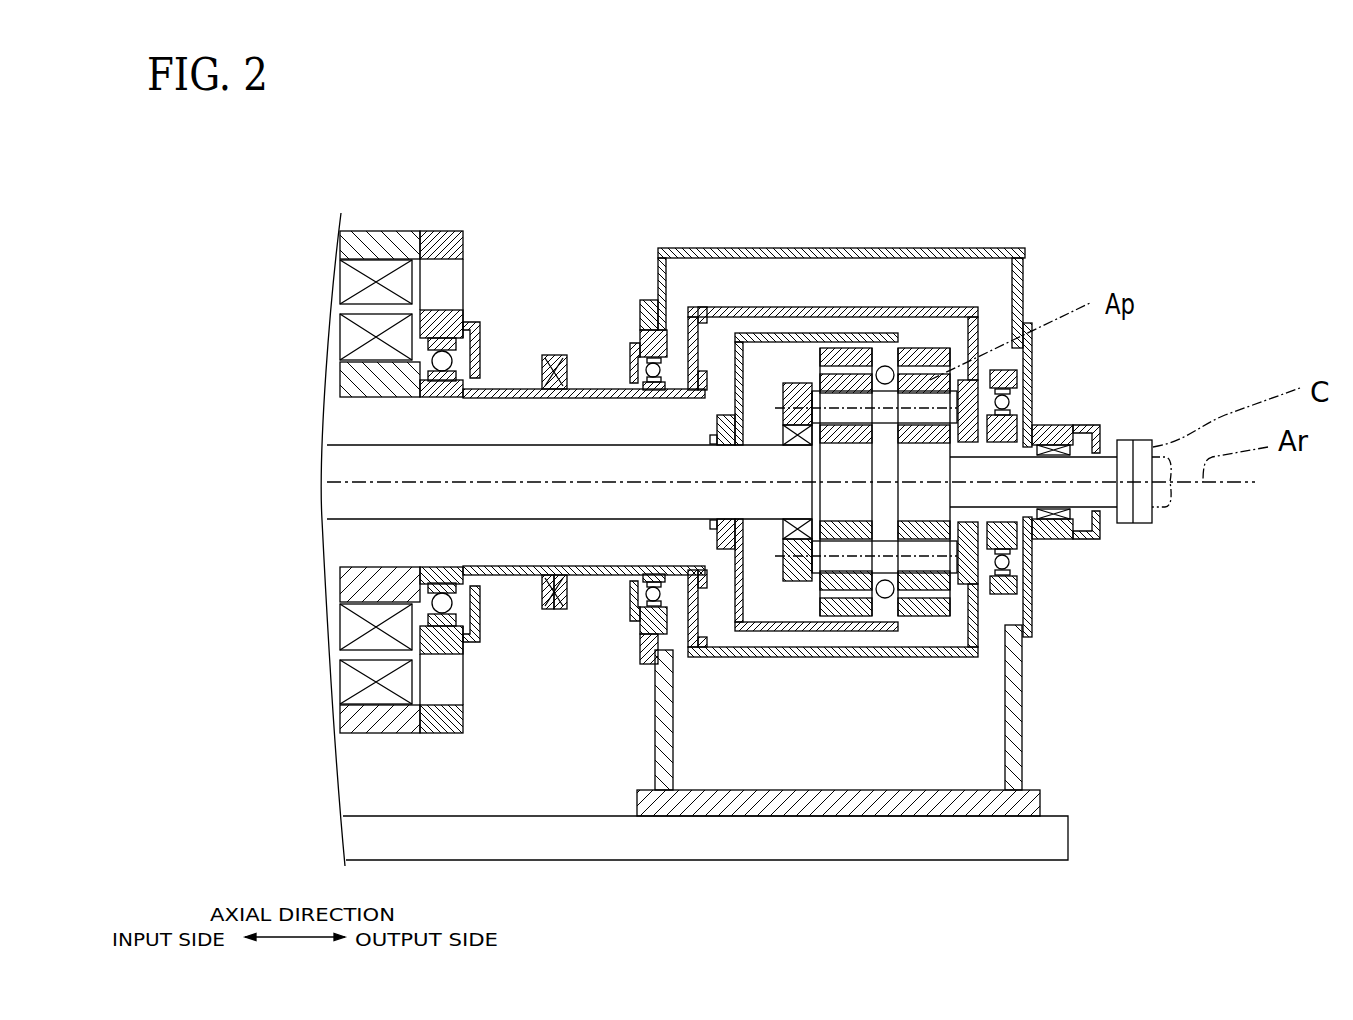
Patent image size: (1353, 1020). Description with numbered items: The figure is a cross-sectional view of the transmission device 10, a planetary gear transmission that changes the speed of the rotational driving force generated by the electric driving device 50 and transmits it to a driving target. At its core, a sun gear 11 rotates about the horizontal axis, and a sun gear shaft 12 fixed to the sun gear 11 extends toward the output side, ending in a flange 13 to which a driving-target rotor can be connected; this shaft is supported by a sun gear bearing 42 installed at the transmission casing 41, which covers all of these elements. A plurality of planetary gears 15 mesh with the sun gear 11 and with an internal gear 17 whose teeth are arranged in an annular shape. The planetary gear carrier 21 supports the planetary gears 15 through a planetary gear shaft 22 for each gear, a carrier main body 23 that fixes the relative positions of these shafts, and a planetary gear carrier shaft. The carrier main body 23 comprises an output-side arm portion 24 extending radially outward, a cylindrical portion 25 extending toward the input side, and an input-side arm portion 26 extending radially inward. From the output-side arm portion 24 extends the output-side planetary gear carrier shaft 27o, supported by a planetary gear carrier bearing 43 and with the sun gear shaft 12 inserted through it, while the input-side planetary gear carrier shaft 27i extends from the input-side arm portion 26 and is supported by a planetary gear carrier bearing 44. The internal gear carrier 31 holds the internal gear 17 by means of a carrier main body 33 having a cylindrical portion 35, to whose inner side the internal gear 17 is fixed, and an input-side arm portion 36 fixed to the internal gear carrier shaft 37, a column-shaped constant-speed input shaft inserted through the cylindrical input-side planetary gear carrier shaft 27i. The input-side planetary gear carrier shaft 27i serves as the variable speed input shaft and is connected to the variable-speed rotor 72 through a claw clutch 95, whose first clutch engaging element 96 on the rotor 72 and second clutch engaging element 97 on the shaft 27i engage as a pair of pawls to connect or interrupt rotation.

The transmission device 10 is at (861, 350).
The sun gear 11 is at (940, 502).
The sun gear shaft 12 is at (1107, 500).
The flange 13 is at (1127, 517).
The planetary gears 15 is at (825, 377).
The internal gear 17 is at (922, 350).
The planetary gear carrier 21 is at (958, 298).
The planetary gear shaft 22 is at (852, 398).
The carrier main body 23 is at (894, 387).
The output-side arm portion 24 is at (978, 330).
The cylindrical portion 25 is at (803, 526).
The input-side arm portion 26 is at (680, 389).
The input-side planetary gear carrier shaft 27i is at (650, 322).
The output-side planetary gear carrier shaft 27o is at (983, 427).
The internal gear carrier 31 is at (687, 650).
The carrier main body 33 is at (803, 649).
The cylindrical portion 35 is at (793, 632).
The input-side arm portion 36 is at (726, 586).
The internal gear carrier shaft 37 is at (677, 503).
The transmission casing 41 is at (655, 251).
The sun gear bearing 42 is at (1063, 520).
The planetary gear carrier bearing 43 is at (1010, 403).
The planetary gear carrier bearing 44 is at (635, 350).
The electric driving device 50 is at (408, 430).
The variable-speed rotor 72 is at (380, 590).
The claw clutch 95 is at (533, 355).
The first clutch engaging element 96 is at (547, 608).
The second clutch engaging element 97 is at (560, 608).